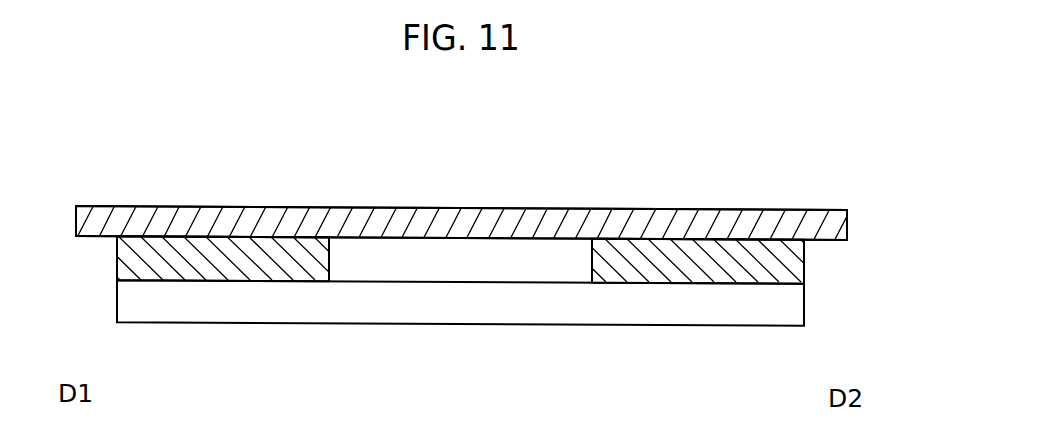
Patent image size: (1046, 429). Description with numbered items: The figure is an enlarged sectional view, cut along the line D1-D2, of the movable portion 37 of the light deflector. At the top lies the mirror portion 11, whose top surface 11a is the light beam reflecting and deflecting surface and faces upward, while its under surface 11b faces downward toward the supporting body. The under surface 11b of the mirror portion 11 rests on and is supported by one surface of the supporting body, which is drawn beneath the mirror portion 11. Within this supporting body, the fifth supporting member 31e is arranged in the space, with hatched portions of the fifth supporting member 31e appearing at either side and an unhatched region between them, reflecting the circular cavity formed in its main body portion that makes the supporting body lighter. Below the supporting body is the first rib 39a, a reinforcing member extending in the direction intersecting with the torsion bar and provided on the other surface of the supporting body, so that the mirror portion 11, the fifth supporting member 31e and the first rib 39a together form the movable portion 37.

The mirror portion 11 is at (403, 196).
The top surface 11a is at (460, 207).
The under surface 11b is at (401, 238).
The fifth supporting member 31e is at (220, 265).
The movable portion 37 is at (764, 131).
The first rib 39a is at (553, 311).